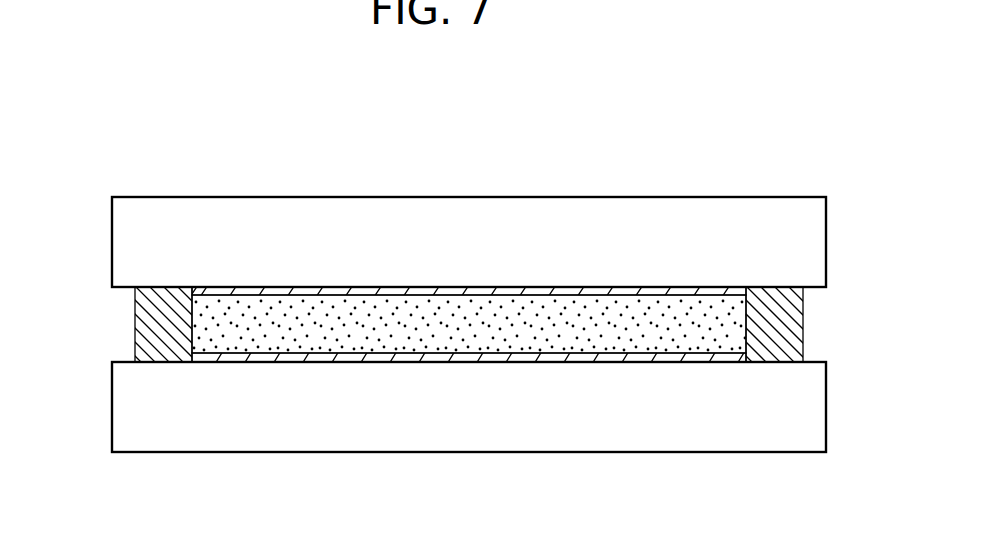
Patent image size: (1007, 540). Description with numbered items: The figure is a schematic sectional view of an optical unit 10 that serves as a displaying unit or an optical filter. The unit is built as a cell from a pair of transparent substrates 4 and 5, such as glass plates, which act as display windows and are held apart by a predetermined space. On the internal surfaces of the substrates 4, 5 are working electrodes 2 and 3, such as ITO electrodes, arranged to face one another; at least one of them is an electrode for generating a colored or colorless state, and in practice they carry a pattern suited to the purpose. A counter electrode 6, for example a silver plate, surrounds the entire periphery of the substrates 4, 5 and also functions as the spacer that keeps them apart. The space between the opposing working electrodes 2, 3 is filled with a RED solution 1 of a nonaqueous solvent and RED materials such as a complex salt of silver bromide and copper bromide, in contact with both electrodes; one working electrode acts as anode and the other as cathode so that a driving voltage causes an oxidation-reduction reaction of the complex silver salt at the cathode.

The optical unit 10 is at (377, 196).
The transparent substrate 4 is at (147, 240).
The transparent substrate 5 is at (147, 405).
The counter electrode 6 is at (137, 327).
The working electrode 2 is at (732, 292).
The RED solution 1 is at (737, 318).
The working electrode 3 is at (735, 360).